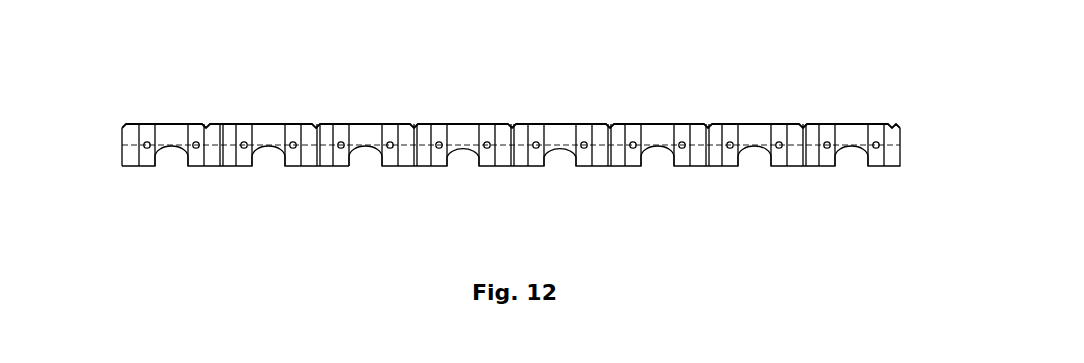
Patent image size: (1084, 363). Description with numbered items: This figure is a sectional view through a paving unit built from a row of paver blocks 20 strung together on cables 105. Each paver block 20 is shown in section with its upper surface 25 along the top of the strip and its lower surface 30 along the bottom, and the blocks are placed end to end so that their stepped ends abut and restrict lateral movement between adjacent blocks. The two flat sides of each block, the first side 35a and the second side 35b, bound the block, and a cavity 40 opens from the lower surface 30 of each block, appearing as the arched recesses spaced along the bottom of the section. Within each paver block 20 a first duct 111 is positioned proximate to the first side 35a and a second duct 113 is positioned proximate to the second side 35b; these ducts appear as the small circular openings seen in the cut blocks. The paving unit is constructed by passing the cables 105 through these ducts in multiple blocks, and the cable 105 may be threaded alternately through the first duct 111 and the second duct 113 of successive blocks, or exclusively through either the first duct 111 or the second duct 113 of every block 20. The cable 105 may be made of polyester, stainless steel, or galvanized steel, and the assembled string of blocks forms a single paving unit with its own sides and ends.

The paver block 20 is at (760, 116).
The upper surface 25 is at (167, 123).
The lower surface 30 is at (321, 167).
The first side 35a is at (122, 130).
The second side 35b is at (207, 127).
The cavity 40 is at (260, 162).
The cable 105 is at (444, 127).
The first duct 111 is at (245, 124).
The second duct 113 is at (292, 124).